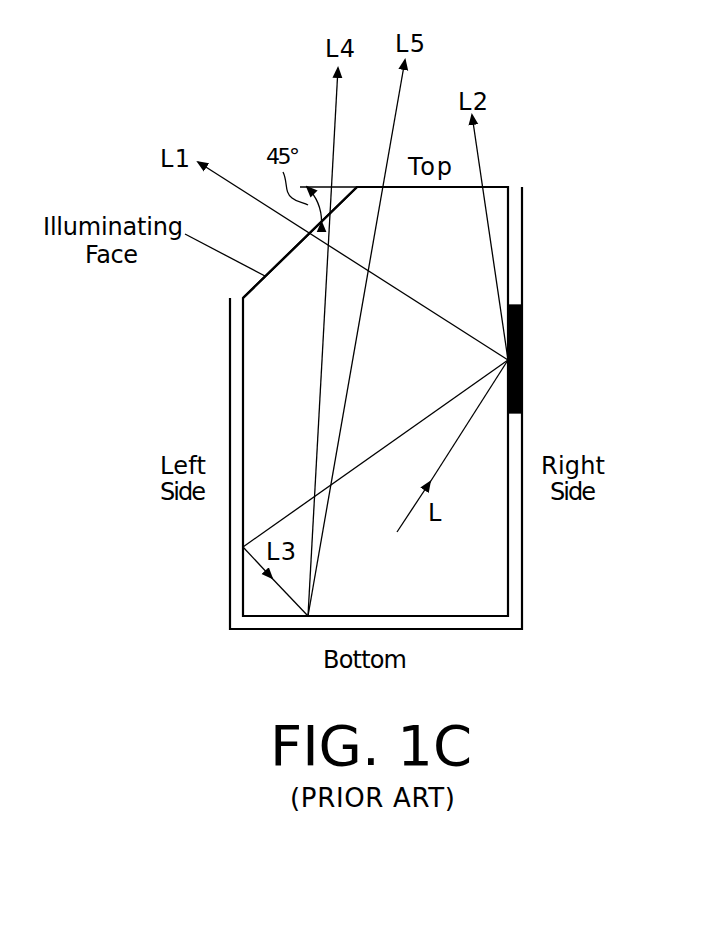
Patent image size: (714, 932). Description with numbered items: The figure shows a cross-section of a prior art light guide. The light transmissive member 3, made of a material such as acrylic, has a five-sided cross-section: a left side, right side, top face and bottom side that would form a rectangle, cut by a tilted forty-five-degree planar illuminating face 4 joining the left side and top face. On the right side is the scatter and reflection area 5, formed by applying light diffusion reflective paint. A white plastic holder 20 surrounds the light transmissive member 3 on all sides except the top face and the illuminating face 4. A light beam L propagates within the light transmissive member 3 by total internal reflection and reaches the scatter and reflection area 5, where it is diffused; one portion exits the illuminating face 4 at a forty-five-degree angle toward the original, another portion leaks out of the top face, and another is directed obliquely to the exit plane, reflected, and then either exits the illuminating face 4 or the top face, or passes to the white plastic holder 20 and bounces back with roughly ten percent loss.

The light transmissive member 3 is at (508, 244).
The illuminating face 4 is at (285, 255).
The scatter and reflection area 5 is at (522, 383).
The white plastic holder 20 is at (522, 575).